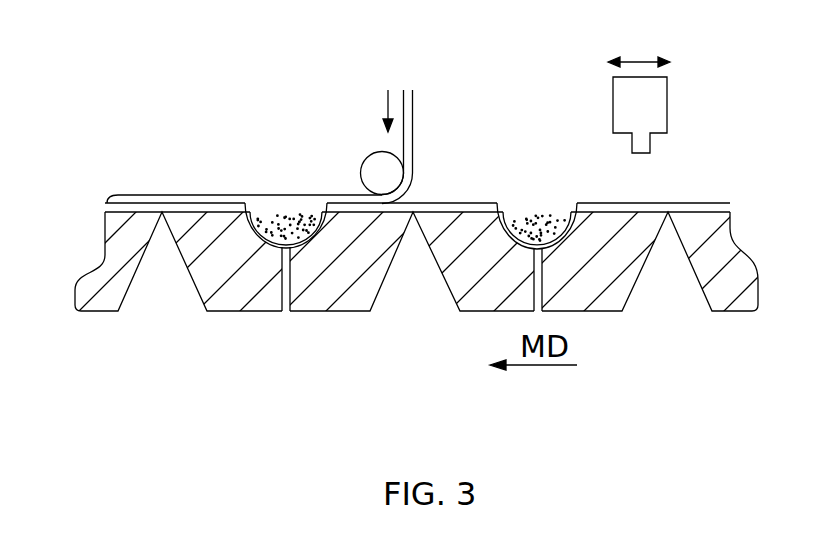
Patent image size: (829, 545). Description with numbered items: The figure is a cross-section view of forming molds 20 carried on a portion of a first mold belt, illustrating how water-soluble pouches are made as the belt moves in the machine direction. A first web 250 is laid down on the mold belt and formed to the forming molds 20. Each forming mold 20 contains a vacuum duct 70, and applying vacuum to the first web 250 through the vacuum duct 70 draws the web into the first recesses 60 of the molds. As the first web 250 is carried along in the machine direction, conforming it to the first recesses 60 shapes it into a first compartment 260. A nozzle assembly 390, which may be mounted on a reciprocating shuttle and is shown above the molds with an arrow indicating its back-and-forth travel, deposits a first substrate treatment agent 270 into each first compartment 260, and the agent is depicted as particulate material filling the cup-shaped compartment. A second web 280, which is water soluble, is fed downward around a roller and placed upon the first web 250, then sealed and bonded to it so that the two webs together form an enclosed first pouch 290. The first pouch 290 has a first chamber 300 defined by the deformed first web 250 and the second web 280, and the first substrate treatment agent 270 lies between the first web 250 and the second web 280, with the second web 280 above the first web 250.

The forming molds 20 is at (95, 288).
The first recesses 60 is at (577, 242).
The vacuum duct 70 is at (282, 293).
The first web 250 is at (707, 203).
The first compartment 260 is at (533, 212).
The first substrate treatment agent 270 is at (300, 232).
The second web 280 is at (413, 113).
The first pouch 290 is at (248, 236).
The first chamber 300 is at (275, 212).
The sealing head 390 is at (655, 112).